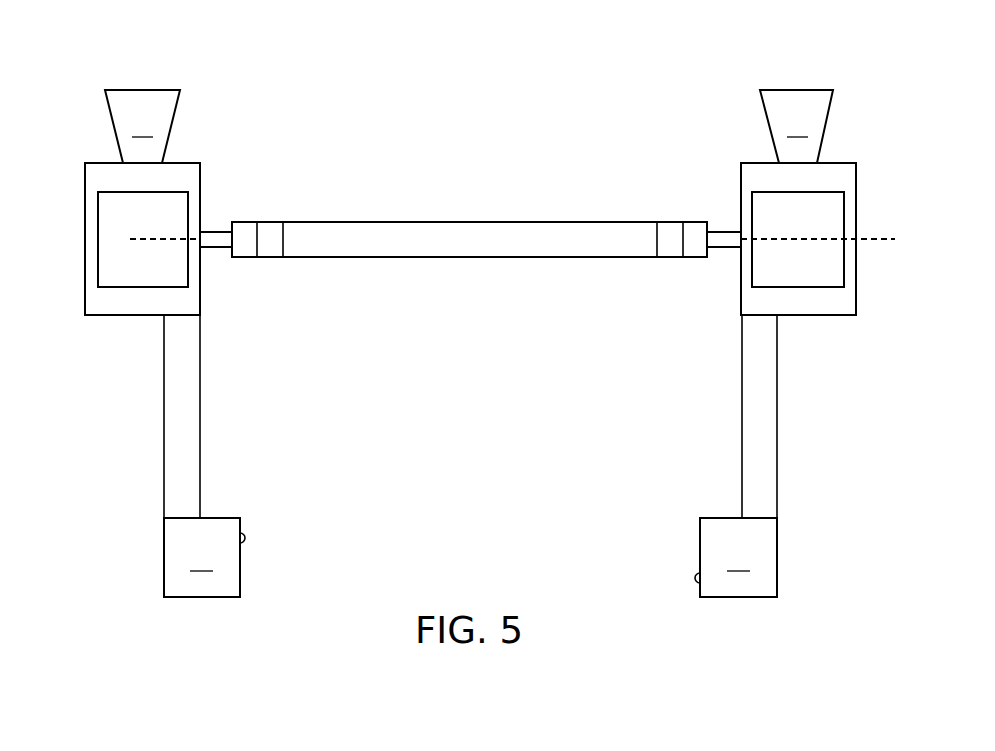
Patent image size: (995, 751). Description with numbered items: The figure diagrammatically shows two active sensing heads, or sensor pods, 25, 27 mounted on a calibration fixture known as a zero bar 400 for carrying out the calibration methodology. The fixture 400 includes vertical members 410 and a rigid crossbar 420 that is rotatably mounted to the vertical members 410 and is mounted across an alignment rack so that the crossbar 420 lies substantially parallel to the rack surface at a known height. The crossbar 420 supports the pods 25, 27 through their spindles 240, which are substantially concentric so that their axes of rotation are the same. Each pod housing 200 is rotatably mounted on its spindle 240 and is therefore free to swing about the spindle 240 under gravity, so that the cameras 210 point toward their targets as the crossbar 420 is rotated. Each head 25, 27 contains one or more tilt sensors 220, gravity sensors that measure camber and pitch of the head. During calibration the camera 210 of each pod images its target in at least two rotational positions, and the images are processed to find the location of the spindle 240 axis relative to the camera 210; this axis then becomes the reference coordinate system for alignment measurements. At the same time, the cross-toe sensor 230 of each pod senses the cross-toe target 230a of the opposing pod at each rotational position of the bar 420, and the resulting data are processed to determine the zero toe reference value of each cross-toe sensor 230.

The active head 25 is at (171, 312).
The active head 27 is at (769, 312).
The pod housing 200 is at (85, 238).
The camera 210 is at (137, 88).
The tilt sensor 220 is at (98, 269).
The cross-toe sensor 230 is at (230, 518).
The cross-toe target 230a is at (246, 538).
The spindle 240 is at (219, 230).
The zero bar 400 is at (469, 232).
The vertical member 410 is at (270, 228).
The crossbar 420 is at (473, 258).